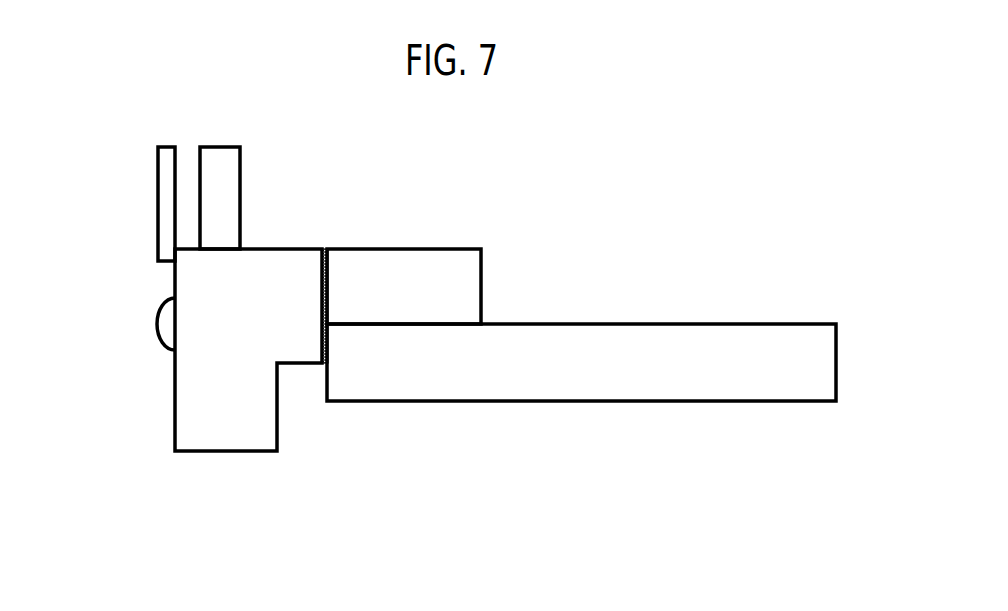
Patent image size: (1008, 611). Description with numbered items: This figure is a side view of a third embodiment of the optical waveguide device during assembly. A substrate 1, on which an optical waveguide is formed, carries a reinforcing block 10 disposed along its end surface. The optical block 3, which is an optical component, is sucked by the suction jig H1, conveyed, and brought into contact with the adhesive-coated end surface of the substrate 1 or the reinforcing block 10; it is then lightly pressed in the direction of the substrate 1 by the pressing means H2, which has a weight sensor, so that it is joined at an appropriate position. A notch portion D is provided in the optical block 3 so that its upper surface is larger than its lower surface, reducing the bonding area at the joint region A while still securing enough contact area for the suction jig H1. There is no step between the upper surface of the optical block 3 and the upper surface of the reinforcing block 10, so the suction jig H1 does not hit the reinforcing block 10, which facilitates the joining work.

The substrate 1 is at (735, 350).
The optical block 3 is at (237, 427).
The reinforcing block 10 is at (403, 275).
The gap region A is at (329, 343).
The notch portion D is at (298, 402).
The suction jig H1 is at (240, 195).
The pressing means H2 is at (167, 185).